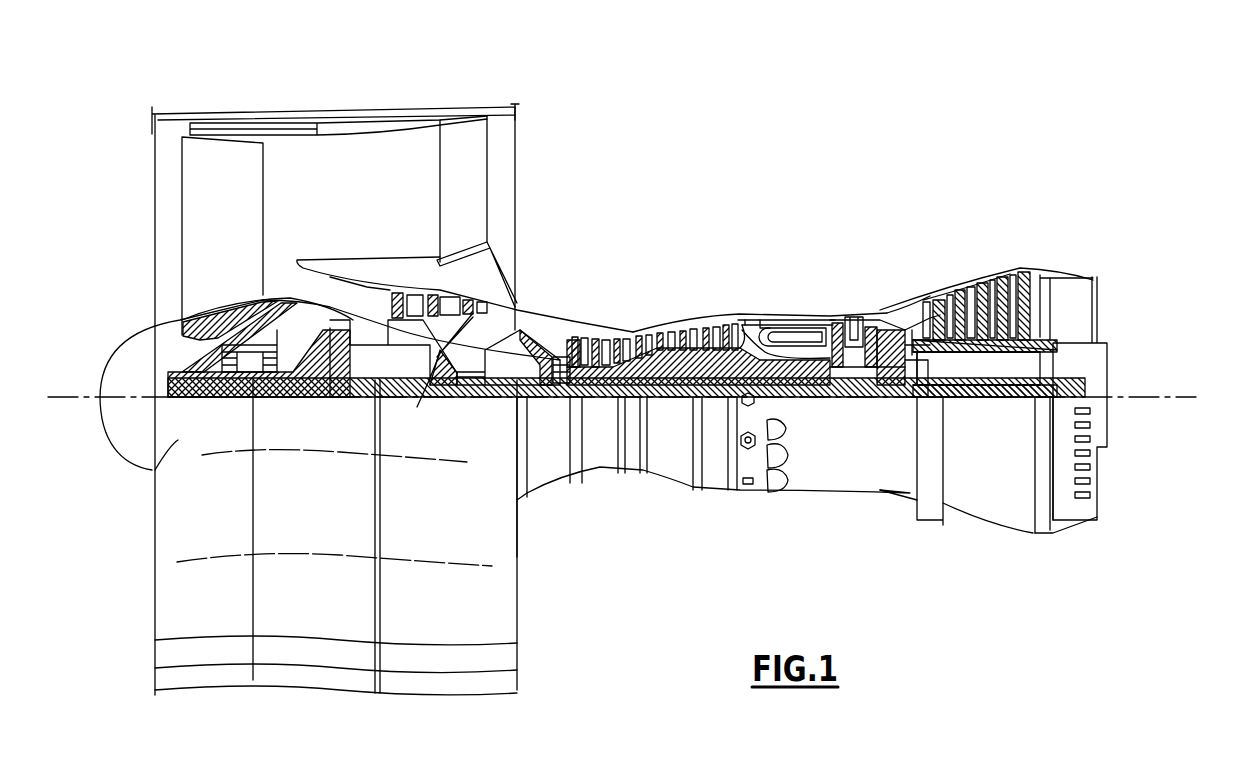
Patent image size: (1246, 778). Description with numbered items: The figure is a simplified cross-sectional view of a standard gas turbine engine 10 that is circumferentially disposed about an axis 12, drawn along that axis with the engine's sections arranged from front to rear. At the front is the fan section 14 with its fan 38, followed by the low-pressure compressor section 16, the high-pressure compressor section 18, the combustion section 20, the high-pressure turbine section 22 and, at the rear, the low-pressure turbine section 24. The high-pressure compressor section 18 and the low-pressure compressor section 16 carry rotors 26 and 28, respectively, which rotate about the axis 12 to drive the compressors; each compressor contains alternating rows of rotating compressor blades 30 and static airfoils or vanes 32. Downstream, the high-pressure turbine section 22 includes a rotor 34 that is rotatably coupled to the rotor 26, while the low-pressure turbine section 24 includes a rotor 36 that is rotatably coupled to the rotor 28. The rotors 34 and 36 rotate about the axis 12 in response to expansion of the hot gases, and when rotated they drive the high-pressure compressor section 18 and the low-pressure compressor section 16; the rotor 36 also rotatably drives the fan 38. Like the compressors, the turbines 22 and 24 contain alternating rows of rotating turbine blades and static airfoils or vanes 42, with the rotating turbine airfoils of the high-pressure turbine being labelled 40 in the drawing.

The gas turbine engine 10 is at (796, 164).
The axis 12 is at (1182, 397).
The fan section 14 is at (263, 108).
The low-pressure compressor section 16 is at (532, 282).
The high-pressure compressor section 18 is at (656, 320).
The combustion section 20 is at (821, 306).
The high-pressure turbine section 22 is at (868, 282).
The low-pressure turbine section 24 is at (1010, 258).
The rotor 26 is at (692, 395).
The rotor 28 is at (417, 392).
The rotating compressor blades 30 is at (601, 335).
The static airfoils or vanes 32 is at (605, 334).
The rotor 34 is at (853, 395).
The rotor 36 is at (1005, 353).
The fan 38 is at (242, 238).
The turbine rotor 40 is at (865, 347).
The static airfoils or vanes 42 is at (853, 318).